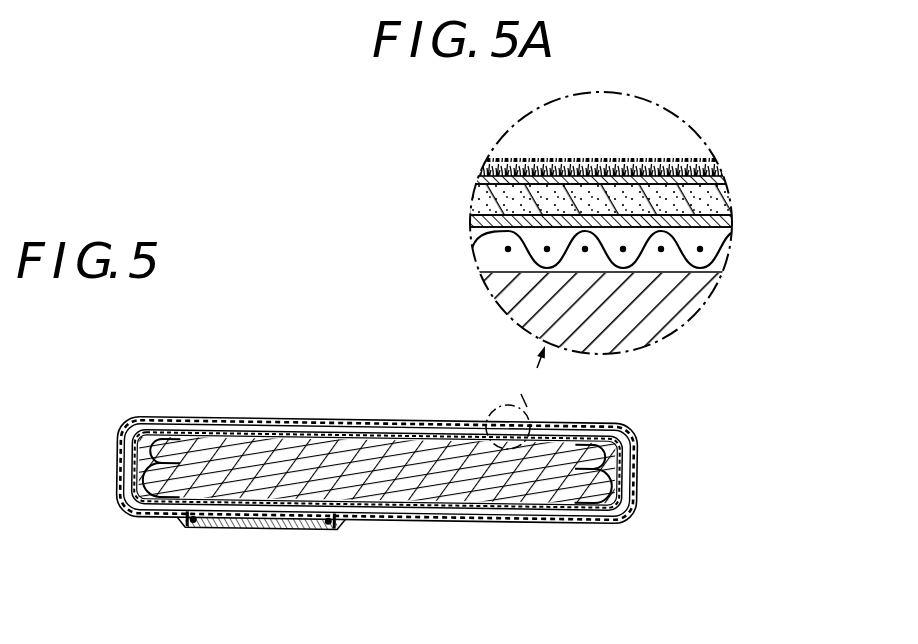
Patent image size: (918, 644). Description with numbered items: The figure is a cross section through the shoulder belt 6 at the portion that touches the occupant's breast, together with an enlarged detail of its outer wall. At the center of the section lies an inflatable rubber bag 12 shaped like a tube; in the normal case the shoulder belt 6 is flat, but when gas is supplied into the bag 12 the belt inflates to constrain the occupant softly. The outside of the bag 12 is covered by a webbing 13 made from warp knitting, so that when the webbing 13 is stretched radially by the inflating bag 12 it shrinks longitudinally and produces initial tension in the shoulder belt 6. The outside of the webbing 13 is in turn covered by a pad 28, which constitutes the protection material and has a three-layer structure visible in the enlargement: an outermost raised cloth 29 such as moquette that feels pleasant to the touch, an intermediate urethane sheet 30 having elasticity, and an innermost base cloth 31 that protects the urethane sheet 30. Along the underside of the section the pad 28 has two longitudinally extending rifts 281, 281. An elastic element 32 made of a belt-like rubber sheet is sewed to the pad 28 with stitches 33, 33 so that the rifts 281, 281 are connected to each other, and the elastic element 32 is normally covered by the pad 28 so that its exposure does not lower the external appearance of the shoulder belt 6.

In FIG. 5, the shoulder belt 6 is at (362, 481).
In FIG. 5, the inflatable rubber bag 12 is at (345, 445).
In FIG. 5A, the inflatable rubber bag 12 is at (648, 318).
In FIG. 5, the webbing 13 is at (440, 508).
In FIG. 5A, the webbing 13 is at (722, 258).
In FIG. 5, the pad 28 is at (556, 530).
In FIG. 5A, the pad 28 is at (545, 203).
In FIG. 5, the rift 281 is at (332, 527).
In FIG. 5A, the raised cloth 29 is at (488, 180).
In FIG. 5A, the urethane sheet 30 is at (478, 195).
In FIG. 5A, the base cloth 31 is at (571, 245).
In FIG. 5, the elastic element 32 is at (255, 528).
In FIG. 5, the stitches 33 is at (195, 527).